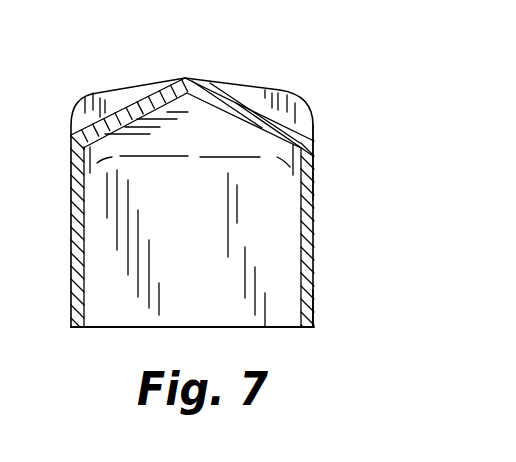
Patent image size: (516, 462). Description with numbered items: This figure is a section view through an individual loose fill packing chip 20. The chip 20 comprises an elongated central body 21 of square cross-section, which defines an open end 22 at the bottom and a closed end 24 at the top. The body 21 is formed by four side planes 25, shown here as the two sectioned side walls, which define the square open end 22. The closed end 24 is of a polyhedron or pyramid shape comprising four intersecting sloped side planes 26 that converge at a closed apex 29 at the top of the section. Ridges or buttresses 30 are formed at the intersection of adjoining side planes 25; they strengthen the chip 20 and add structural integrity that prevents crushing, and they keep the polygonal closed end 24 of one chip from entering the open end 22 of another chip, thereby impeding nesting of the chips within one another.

The chip 20 is at (318, 184).
The elongated central body 21 is at (315, 307).
The open end 22 is at (180, 360).
The closed end 24 is at (312, 128).
The side planes 25 is at (313, 228).
The sloped side planes 26 is at (267, 96).
The closed apex 29 is at (190, 77).
The ridges or buttresses 30 is at (97, 96).